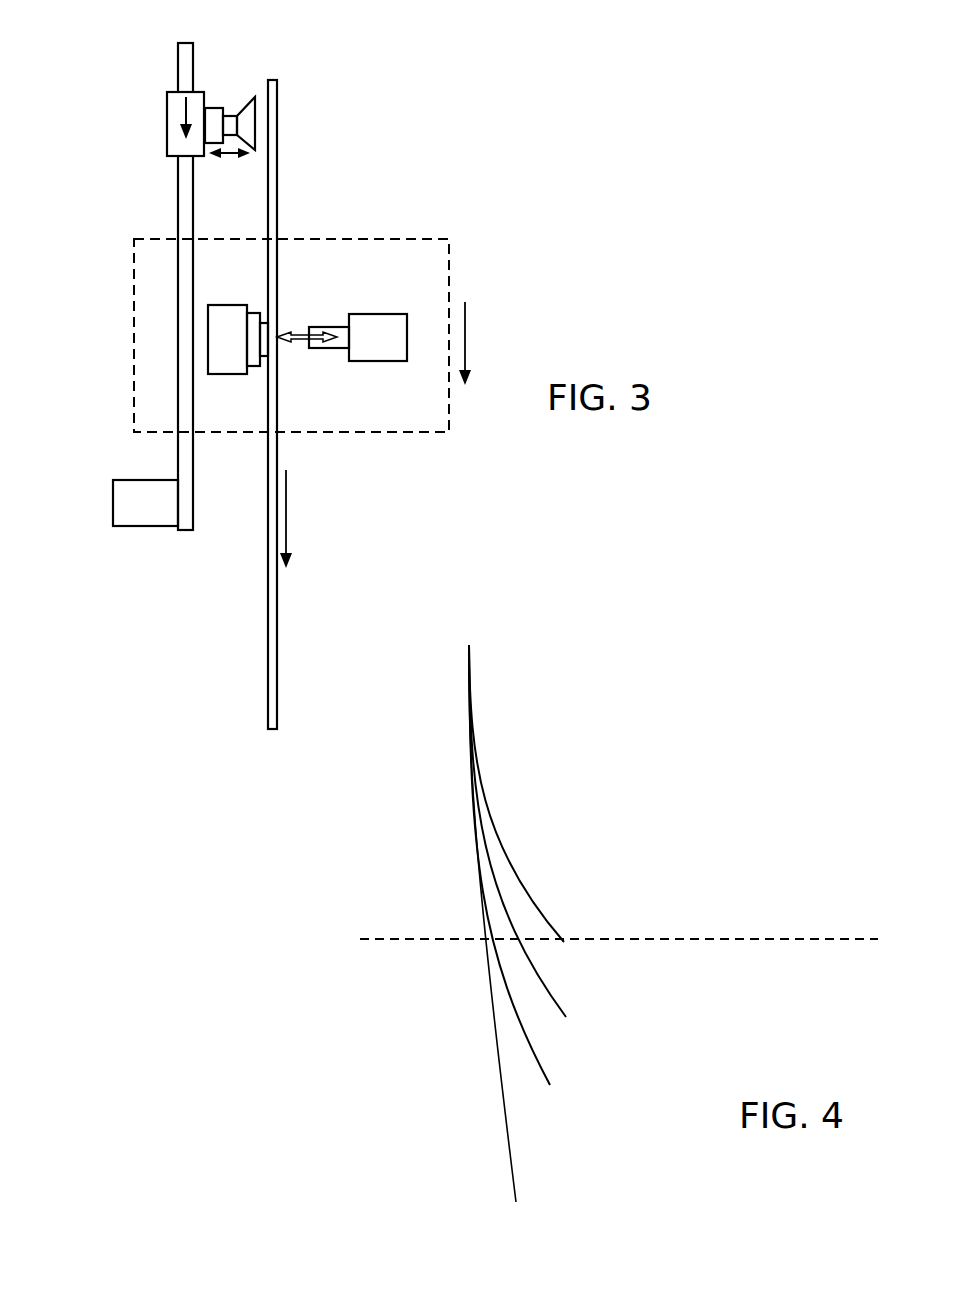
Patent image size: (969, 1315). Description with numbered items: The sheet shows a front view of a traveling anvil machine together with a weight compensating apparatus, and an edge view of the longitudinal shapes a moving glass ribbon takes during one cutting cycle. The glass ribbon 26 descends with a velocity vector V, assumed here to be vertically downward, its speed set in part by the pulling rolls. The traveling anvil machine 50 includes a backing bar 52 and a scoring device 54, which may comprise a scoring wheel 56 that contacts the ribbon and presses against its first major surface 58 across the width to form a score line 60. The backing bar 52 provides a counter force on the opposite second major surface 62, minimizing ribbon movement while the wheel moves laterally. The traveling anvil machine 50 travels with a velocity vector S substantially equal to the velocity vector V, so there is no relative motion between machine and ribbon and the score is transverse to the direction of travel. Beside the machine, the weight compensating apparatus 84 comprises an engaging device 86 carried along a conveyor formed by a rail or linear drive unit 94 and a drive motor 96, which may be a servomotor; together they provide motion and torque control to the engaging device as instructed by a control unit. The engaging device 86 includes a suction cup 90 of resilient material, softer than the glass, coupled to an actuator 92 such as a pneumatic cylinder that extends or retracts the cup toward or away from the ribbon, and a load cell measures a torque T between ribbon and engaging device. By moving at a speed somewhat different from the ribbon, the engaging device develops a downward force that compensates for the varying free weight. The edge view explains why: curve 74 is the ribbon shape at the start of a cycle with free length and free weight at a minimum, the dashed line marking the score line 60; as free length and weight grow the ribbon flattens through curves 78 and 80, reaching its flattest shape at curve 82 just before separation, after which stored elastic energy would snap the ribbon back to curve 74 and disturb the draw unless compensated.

In FIG. 3, the glass ribbon 26 is at (288, 618).
In FIG. 3, the traveling anvil machine 50 is at (428, 239).
In FIG. 3, the backing bar 52 is at (218, 305).
In FIG. 3, the scoring device 54 is at (370, 302).
In FIG. 3, the scoring wheel 56 is at (300, 343).
In FIG. 3, the first major surface 58 is at (278, 207).
In FIG. 4, the score line 60 is at (772, 939).
In FIG. 3, the second major surface 62 is at (268, 531).
In FIG. 4, the curve 74 is at (550, 924).
In FIG. 4, the curve 78 is at (562, 1011).
In FIG. 4, the curve 80 is at (548, 1080).
In FIG. 4, the curve 82 is at (514, 1176).
In FIG. 3, the weight compensating apparatus 84 is at (88, 124).
In FIG. 3, the engaging device 86 is at (155, 100).
In FIG. 3, the suction cup 90 is at (257, 148).
In FIG. 3, the actuator 92 is at (227, 110).
In FIG. 3, the linear drive unit 94 is at (180, 192).
In FIG. 3, the drive motor 96 is at (143, 527).
In FIG. 3, the torque T is at (188, 105).
In FIG. 3, the velocity vector S is at (468, 335).
In FIG. 3, the velocity vector V is at (287, 512).